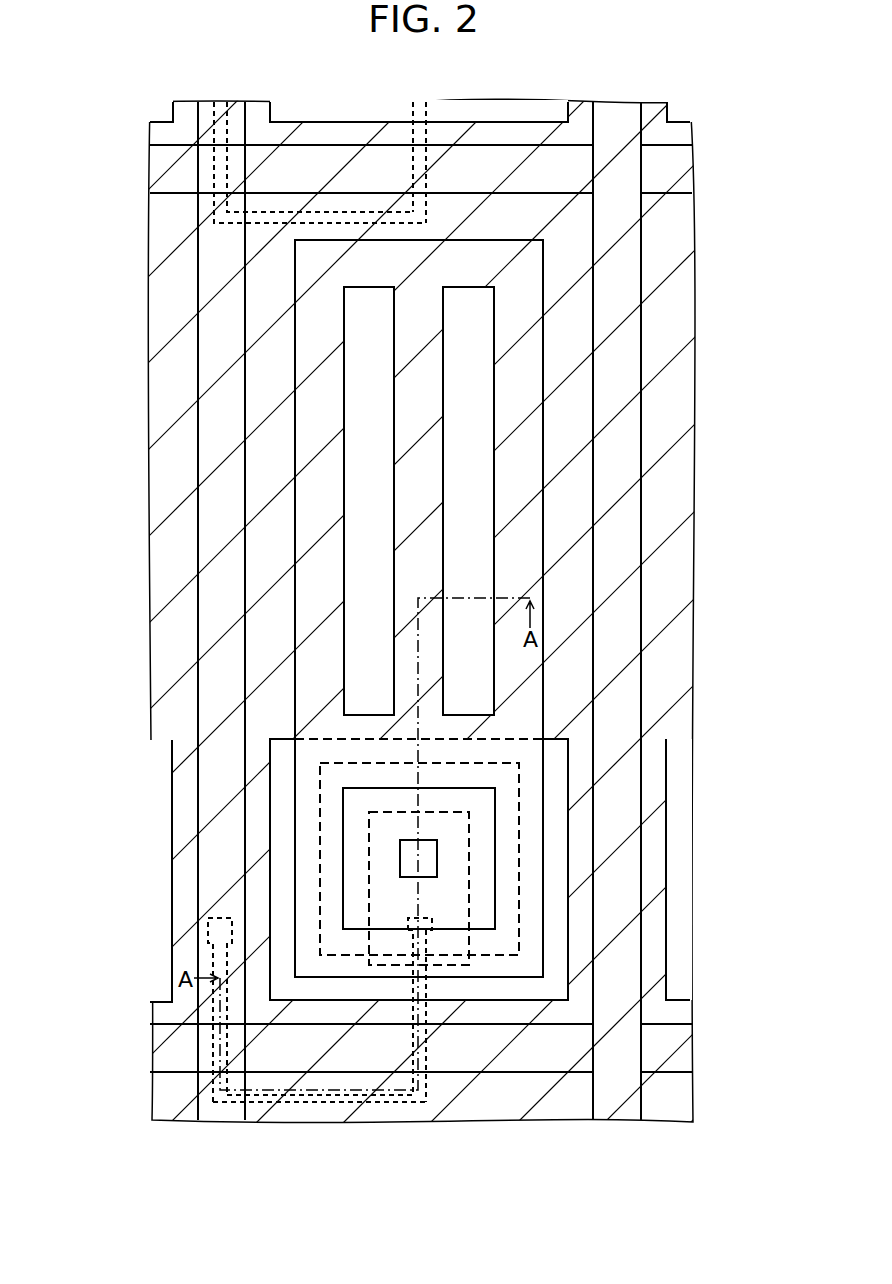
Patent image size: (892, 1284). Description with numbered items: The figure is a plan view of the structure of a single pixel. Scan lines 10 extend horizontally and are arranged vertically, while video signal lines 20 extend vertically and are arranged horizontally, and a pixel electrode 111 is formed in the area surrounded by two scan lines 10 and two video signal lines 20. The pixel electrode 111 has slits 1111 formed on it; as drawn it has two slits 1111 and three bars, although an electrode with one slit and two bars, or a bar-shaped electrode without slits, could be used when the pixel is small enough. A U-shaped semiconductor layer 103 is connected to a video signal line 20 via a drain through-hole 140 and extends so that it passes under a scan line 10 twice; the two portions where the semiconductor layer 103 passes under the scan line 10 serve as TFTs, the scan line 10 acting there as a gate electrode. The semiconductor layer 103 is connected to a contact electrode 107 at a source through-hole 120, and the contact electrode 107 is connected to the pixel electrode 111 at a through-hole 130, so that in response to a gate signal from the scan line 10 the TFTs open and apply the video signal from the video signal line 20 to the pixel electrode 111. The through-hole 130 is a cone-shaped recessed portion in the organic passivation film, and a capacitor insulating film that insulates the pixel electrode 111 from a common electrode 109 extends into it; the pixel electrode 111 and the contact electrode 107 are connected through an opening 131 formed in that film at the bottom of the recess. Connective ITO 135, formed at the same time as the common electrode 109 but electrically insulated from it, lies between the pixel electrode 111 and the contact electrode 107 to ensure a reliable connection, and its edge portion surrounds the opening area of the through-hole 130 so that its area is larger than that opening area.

The scan line 10 is at (167, 164).
The video signal line 20 is at (215, 360).
The semiconductor layer 103 is at (320, 1104).
The contact electrode 107 is at (469, 885).
The common electrode 109 is at (570, 666).
The pixel electrode 111 is at (518, 548).
The slit 1111 is at (470, 430).
The source through-hole 120 is at (430, 937).
The through-hole 130 is at (495, 813).
The opening 131 is at (437, 856).
The connective ITO 135 is at (519, 918).
The drain through-hole 140 is at (207, 924).